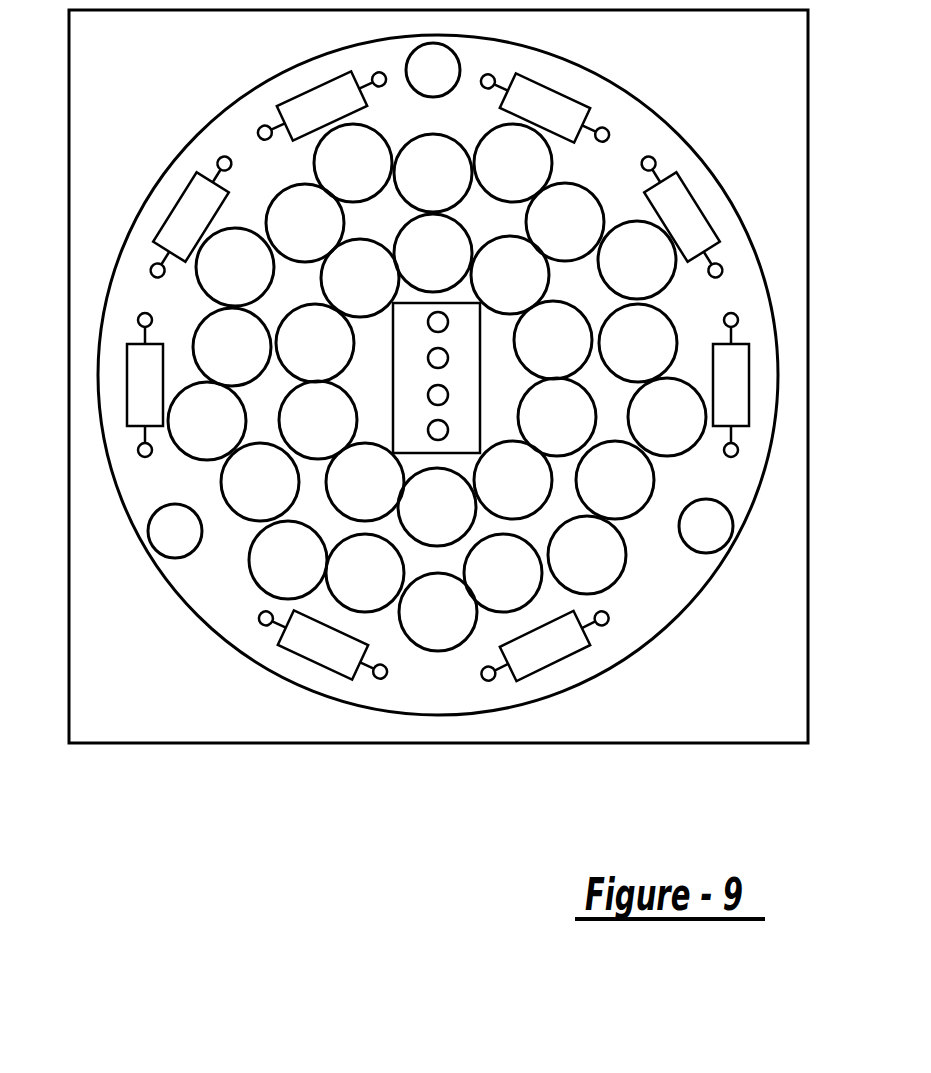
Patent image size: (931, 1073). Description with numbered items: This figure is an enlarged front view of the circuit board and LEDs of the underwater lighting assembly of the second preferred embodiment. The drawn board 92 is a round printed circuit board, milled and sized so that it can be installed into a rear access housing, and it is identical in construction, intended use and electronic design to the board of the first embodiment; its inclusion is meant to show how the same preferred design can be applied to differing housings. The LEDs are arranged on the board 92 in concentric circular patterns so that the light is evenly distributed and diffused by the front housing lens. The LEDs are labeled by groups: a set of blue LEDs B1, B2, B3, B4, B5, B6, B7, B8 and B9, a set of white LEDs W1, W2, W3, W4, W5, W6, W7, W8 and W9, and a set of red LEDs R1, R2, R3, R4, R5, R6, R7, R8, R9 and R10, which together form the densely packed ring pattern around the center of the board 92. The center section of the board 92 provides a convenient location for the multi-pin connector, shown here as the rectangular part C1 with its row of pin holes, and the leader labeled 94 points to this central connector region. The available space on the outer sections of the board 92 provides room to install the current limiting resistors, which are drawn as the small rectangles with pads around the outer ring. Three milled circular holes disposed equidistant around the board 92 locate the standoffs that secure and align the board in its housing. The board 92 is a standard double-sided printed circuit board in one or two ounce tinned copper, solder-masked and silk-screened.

The board 92 is at (162, 750).
The connector 94 is at (408, 603).
The connector C1 is at (436, 378).
The blue LED B1 is at (438, 612).
The blue LED B2 is at (587, 555).
The blue LED B3 is at (667, 417).
The blue LED B4 is at (637, 260).
The blue LED B5 is at (513, 163).
The blue LED B6 is at (353, 163).
The blue LED B7 is at (235, 267).
The blue LED B8 is at (207, 421).
The blue LED B9 is at (288, 560).
The white LED W1 is at (503, 573).
The white LED W2 is at (615, 480).
The white LED W3 is at (638, 343).
The white LED W4 is at (565, 222).
The white LED W5 is at (433, 173).
The white LED W6 is at (305, 223).
The white LED W7 is at (232, 347).
The white LED W8 is at (260, 482).
The white LED W9 is at (365, 573).
The red LED / resistor R1 is at (434, 302).
The red LED / resistor R2 is at (371, 421).
The red LED / resistor R3 is at (500, 420).
The red LED R4 is at (553, 340).
The red LED R5 is at (510, 275).
The red LED R6 is at (433, 253).
The red LED R7 is at (360, 278).
The red LED R8 is at (315, 343).
The red LED R9 is at (318, 420).
The red LED R10 is at (365, 482).